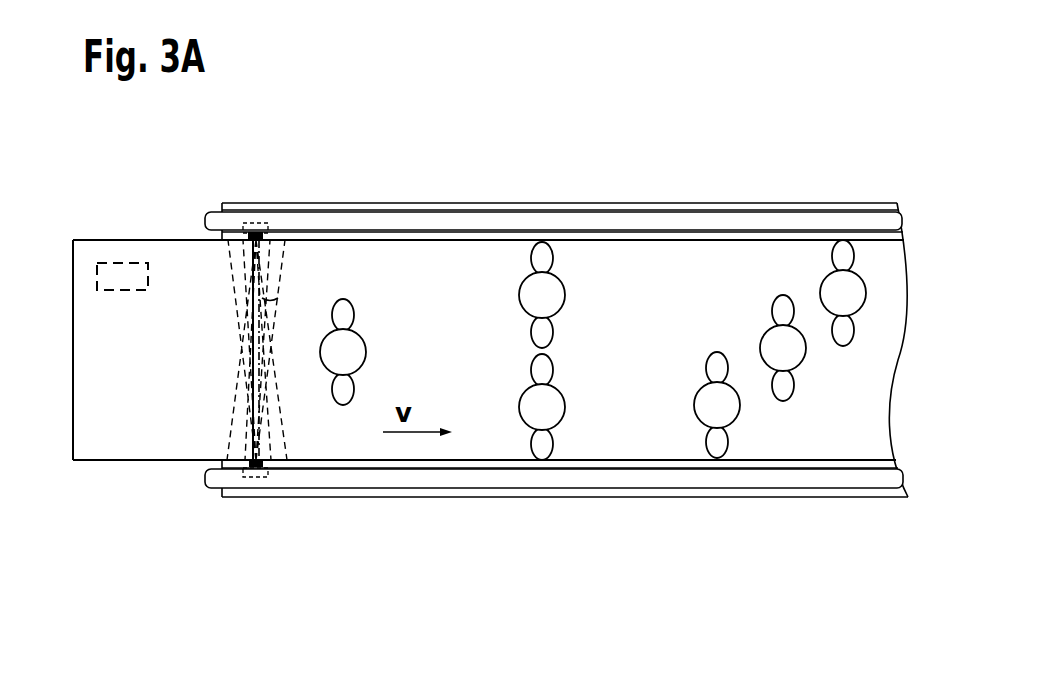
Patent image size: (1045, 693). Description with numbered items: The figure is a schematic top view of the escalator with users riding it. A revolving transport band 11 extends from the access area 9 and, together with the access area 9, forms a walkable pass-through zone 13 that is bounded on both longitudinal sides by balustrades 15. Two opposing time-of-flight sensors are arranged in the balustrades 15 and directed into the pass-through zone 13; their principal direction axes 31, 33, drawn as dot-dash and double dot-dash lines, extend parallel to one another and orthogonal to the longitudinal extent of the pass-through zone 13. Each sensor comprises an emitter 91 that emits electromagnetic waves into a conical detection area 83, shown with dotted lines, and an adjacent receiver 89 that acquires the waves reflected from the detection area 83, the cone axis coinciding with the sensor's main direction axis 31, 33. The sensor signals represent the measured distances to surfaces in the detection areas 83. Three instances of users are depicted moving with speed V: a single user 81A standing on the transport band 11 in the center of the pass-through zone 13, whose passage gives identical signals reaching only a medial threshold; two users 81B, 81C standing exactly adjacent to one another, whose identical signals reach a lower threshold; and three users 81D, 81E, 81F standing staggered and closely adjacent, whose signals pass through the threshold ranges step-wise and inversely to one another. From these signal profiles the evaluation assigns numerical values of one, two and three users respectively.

The access area 9 is at (92, 352).
The transport band 11 is at (684, 268).
The pass-through zone 13 is at (446, 276).
The balustrade 15 is at (760, 205).
The principal direction axis 31 is at (250, 334).
The principal direction axis 33 is at (288, 298).
The detection area 83 is at (240, 276).
The receiver 89 is at (262, 232).
The emitter 91 is at (250, 230).
The user 81A is at (355, 350).
The user 81B is at (553, 292).
The user 81C is at (553, 404).
The user 81D is at (832, 293).
The user 81E is at (772, 346).
The user 81F is at (728, 407).